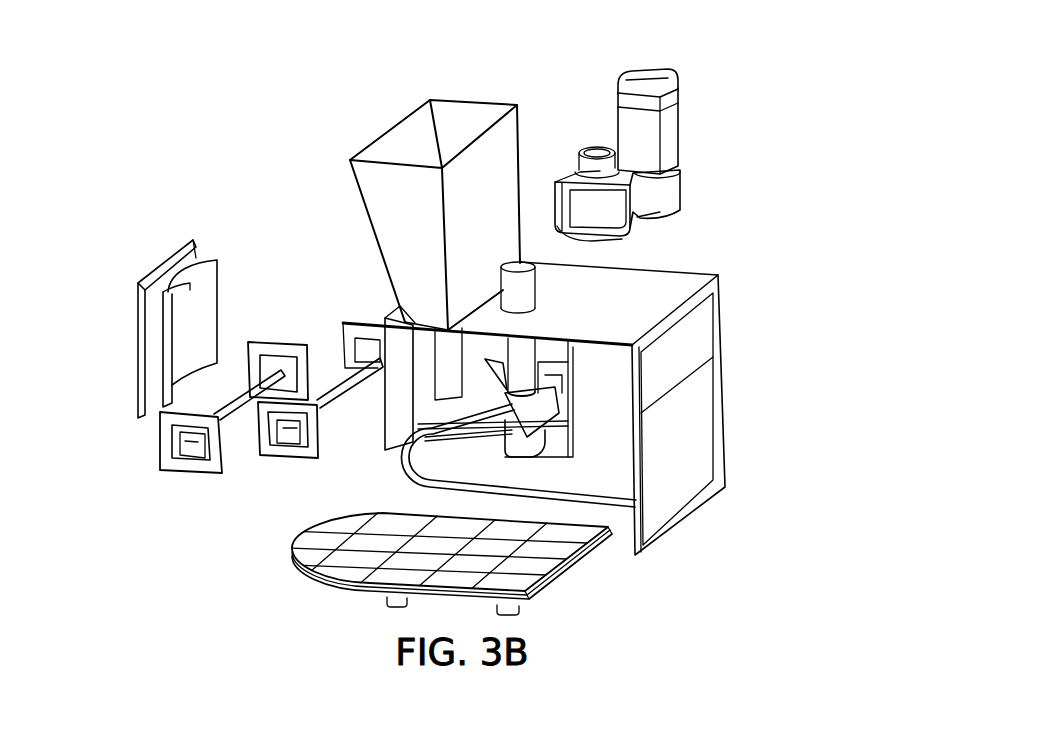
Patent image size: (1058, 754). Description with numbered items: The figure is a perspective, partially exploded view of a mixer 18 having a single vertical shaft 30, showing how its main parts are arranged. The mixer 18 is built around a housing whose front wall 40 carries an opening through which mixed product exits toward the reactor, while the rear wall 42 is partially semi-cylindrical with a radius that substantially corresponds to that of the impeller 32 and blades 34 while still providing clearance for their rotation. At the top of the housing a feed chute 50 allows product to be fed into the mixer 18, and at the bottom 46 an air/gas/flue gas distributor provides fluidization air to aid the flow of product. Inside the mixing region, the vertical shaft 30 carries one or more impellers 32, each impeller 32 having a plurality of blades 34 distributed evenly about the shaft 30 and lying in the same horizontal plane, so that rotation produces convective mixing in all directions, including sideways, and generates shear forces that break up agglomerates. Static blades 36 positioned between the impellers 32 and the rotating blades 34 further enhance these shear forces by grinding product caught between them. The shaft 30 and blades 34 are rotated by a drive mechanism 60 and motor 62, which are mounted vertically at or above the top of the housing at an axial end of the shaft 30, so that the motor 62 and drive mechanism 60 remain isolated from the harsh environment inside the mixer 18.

The mixer 18 is at (612, 56).
The vertical shaft 30 is at (520, 368).
The impeller 32 is at (440, 447).
The blades 34 is at (562, 412).
The static blades 36 is at (258, 452).
The front wall 40 is at (690, 452).
The rear wall 42 is at (162, 262).
The bottom 46 is at (297, 570).
The feed chute 50 is at (426, 155).
The drive mechanism 60 is at (683, 184).
The motor 62 is at (684, 94).